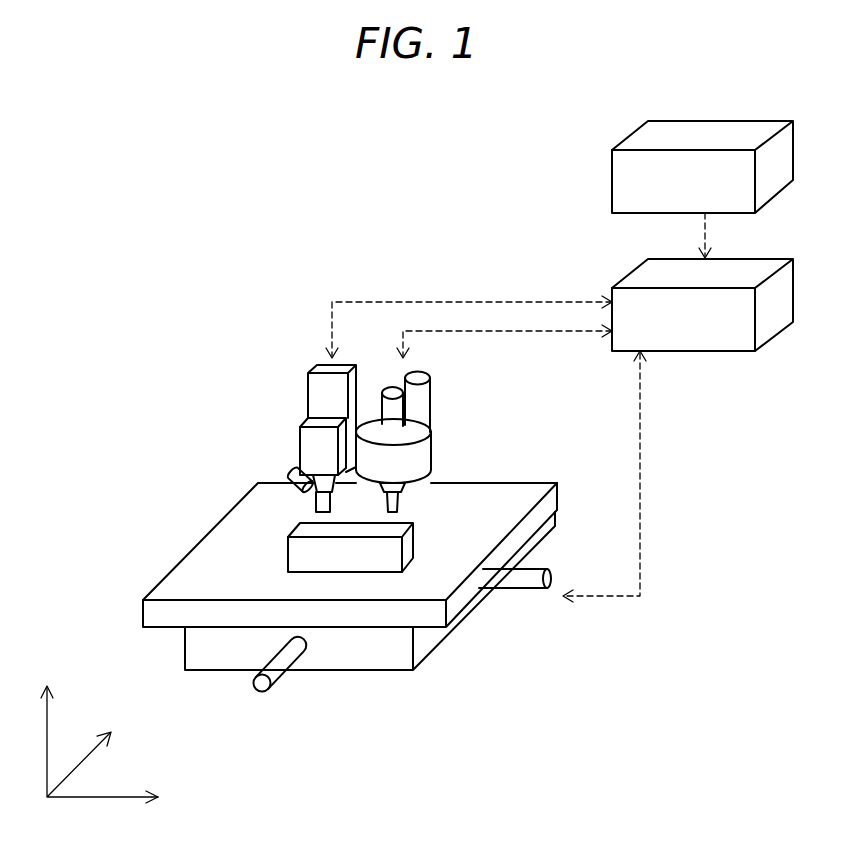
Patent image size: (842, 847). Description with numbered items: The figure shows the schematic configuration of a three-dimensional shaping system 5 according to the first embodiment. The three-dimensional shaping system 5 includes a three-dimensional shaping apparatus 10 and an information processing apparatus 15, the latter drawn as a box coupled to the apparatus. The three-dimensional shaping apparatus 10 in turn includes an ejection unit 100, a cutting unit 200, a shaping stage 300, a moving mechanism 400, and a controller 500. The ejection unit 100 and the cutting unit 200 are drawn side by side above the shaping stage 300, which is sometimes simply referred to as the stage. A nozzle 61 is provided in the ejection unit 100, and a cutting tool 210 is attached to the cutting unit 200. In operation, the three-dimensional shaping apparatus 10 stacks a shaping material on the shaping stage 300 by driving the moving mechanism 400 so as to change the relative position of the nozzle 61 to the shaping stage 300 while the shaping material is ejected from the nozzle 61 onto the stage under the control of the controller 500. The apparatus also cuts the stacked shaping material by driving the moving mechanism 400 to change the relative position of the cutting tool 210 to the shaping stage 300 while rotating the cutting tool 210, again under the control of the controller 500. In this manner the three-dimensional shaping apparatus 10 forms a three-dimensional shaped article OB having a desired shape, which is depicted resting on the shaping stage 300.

The three-dimensional shaping system 5 is at (90, 153).
The three-dimensional shaping apparatus 10 is at (145, 263).
The information processing apparatus 15 is at (612, 178).
The controller 500 is at (682, 352).
The nozzle 61 is at (400, 510).
The shaping stage 300 is at (455, 602).
The moving mechanism 400 is at (518, 615).
The three-dimensional shaped article OB is at (288, 557).
The ejection unit 100 is at (432, 443).
The cutting unit 200 is at (299, 439).
The cutting tool 210 is at (316, 508).